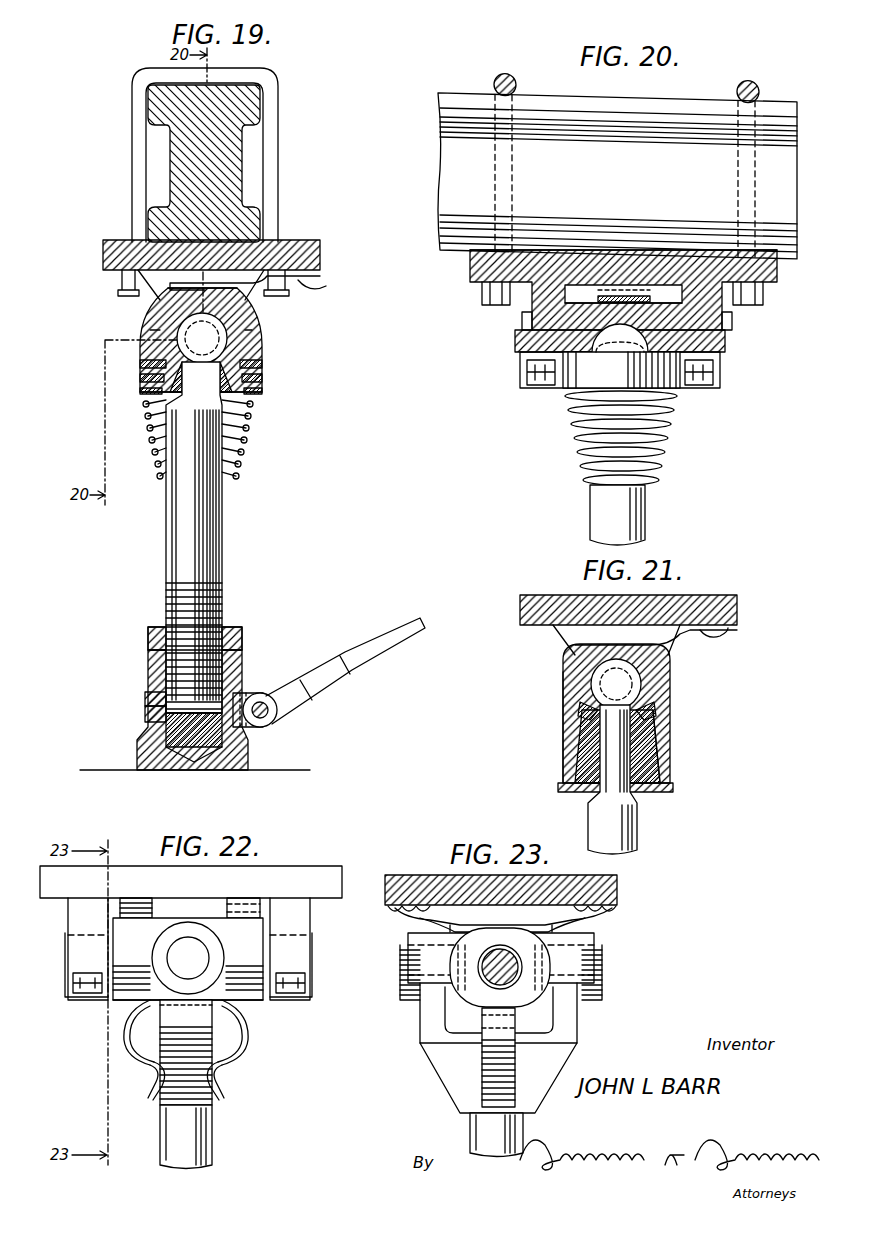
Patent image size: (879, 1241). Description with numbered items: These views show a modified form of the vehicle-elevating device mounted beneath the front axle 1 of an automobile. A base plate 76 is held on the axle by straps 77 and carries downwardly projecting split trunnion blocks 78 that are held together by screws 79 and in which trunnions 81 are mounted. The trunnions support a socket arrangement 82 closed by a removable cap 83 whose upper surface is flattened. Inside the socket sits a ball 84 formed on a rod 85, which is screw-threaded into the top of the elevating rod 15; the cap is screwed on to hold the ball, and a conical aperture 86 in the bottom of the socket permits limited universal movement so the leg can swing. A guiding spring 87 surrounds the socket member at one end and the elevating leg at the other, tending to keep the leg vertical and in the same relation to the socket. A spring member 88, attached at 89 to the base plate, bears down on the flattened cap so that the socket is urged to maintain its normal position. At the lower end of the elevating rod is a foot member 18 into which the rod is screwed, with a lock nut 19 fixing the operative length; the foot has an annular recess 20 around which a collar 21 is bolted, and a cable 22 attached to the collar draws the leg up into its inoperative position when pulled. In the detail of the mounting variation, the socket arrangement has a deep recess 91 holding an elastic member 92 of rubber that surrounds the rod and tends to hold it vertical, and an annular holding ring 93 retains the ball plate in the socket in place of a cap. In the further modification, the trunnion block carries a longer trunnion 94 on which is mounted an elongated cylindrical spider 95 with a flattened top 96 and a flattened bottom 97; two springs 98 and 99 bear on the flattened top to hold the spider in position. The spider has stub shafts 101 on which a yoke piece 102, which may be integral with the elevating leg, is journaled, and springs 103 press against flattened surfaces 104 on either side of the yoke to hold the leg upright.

In FIG. 19, the front axle 1 is at (172, 136).
In FIG. 20, the front axle 1 is at (648, 112).
In FIG. 19, the elevating rod 15 is at (222, 532).
In FIG. 20, the elevating rod 15 is at (648, 506).
In FIG. 21, the elevating rod 15 is at (637, 838).
In FIG. 22, the elevating rod 15 is at (212, 1130).
In FIG. 23, the elevating rod 15 is at (470, 1128).
In FIG. 19, the foot member 18 is at (248, 760).
In FIG. 19, the lock nut 19 is at (242, 638).
In FIG. 19, the annular recess 20 is at (145, 716).
In FIG. 19, the collar 21 is at (145, 698).
In FIG. 19, the cable 22 is at (355, 660).
In FIG. 19, the base plate 76 is at (103, 252).
In FIG. 20, the base plate 76 is at (470, 268).
In FIG. 21, the base plate 76 is at (737, 611).
In FIG. 22, the base plate 76 is at (330, 880).
In FIG. 23, the base plate 76 is at (617, 898).
In FIG. 19, the straps 77 is at (132, 180).
In FIG. 20, the straps 77 is at (505, 74).
In FIG. 19, the split trunnion blocks 78 is at (140, 292).
In FIG. 20, the split trunnion blocks 78 is at (522, 318).
In FIG. 21, the split trunnion blocks 78 is at (566, 638).
In FIG. 22, the split trunnion blocks 78 is at (70, 916).
In FIG. 23, the split trunnion blocks 78 is at (486, 915).
In FIG. 20, the screws 79 is at (525, 372).
In FIG. 20, the trunnions 81 is at (515, 343).
In FIG. 21, the trunnions 81 is at (565, 704).
In FIG. 19, the socket arrangement 82 is at (258, 340).
In FIG. 20, the socket arrangement 82 is at (562, 388).
In FIG. 21, the socket arrangement 82 is at (665, 724).
In FIG. 19, the removable cap 83 is at (246, 300).
In FIG. 20, the removable cap 83 is at (623, 294).
In FIG. 19, the ball 84 is at (227, 350).
In FIG. 20, the ball 84 is at (623, 295).
In FIG. 21, the ball 84 is at (600, 676).
In FIG. 19, the rod 85 is at (240, 393).
In FIG. 21, the rod 85 is at (605, 751).
In FIG. 19, the conical aperture 86 is at (152, 378).
In FIG. 19, the guiding spring 87 is at (250, 440).
In FIG. 20, the guiding spring 87 is at (660, 438).
In FIG. 19, the spring member 88 is at (270, 268).
In FIG. 20, the spring member 88 is at (650, 250).
In FIG. 21, the spring member 88 is at (686, 648).
In FIG. 19, the attachment point 89 is at (326, 287).
In FIG. 21, the attachment point 89 is at (728, 640).
In FIG. 21, the deep recess 91 is at (655, 750).
In FIG. 21, the elastic member 92 is at (650, 790).
In FIG. 21, the annular holding ring 93 is at (648, 702).
In FIG. 22, the trunnion 94 is at (65, 959).
In FIG. 23, the trunnion 94 is at (503, 948).
In FIG. 22, the elongated cylindrical spider 95 is at (252, 1003).
In FIG. 23, the elongated cylindrical spider 95 is at (520, 1008).
In FIG. 22, the flattened top 96 is at (188, 950).
In FIG. 23, the flattened top 96 is at (458, 945).
In FIG. 22, the flattened bottom 97 is at (244, 1012).
In FIG. 23, the flattened bottom 97 is at (478, 1008).
In FIG. 22, the spring 98 is at (138, 898).
In FIG. 23, the spring 98 is at (565, 925).
In FIG. 22, the spring 99 is at (258, 900).
In FIG. 23, the spring 99 is at (430, 915).
In FIG. 22, the stub shafts 101 is at (176, 952).
In FIG. 23, the stub shafts 101 is at (594, 972).
In FIG. 22, the yoke piece 102 is at (200, 1023).
In FIG. 23, the yoke piece 102 is at (577, 1024).
In FIG. 22, the springs 103 is at (150, 1050).
In FIG. 23, the springs 103 is at (515, 1056).
In FIG. 22, the flattened surfaces 104 is at (152, 1084).
In FIG. 23, the flattened surfaces 104 is at (458, 1060).